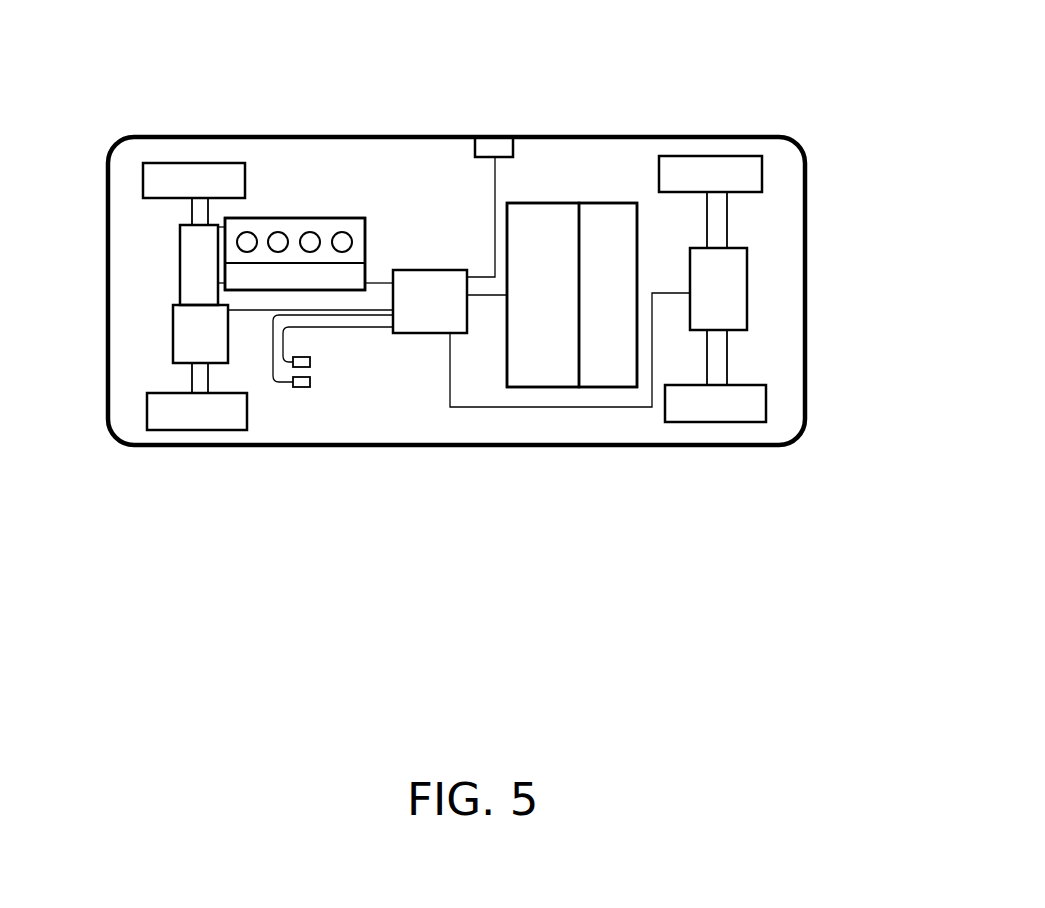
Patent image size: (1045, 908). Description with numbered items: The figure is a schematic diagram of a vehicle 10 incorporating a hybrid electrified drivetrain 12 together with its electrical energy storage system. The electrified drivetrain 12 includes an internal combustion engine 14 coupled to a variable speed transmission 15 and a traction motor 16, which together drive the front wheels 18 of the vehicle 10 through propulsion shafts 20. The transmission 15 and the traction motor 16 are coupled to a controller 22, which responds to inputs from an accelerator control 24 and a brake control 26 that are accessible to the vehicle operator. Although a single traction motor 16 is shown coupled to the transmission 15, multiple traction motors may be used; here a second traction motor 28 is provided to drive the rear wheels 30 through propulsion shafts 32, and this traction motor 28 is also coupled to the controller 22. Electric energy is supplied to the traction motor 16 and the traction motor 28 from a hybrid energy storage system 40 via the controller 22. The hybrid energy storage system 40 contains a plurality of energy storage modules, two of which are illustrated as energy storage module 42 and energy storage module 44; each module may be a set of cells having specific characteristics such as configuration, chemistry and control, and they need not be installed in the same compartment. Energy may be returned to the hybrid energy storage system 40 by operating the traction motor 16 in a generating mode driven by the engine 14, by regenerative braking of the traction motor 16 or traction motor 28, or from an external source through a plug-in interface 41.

The vehicle 10 is at (726, 131).
The electrified drivetrain 12 is at (278, 185).
The internal combustion engine 14 is at (300, 218).
The variable speed transmission 15 is at (180, 255).
The traction motor 16 is at (172, 325).
The front wheels 18 is at (192, 162).
The propulsion shafts 20 is at (188, 213).
The controller 22 is at (418, 270).
The accelerator control 24 is at (310, 362).
The brake control 26 is at (293, 387).
The traction motor 28 is at (747, 280).
The rear wheels 30 is at (763, 178).
The propulsion shafts 32 is at (727, 218).
The hybrid energy storage system 40 is at (573, 188).
The plug-in interface 41 is at (508, 137).
The energy storage module 42 is at (533, 388).
The energy storage module 44 is at (598, 388).